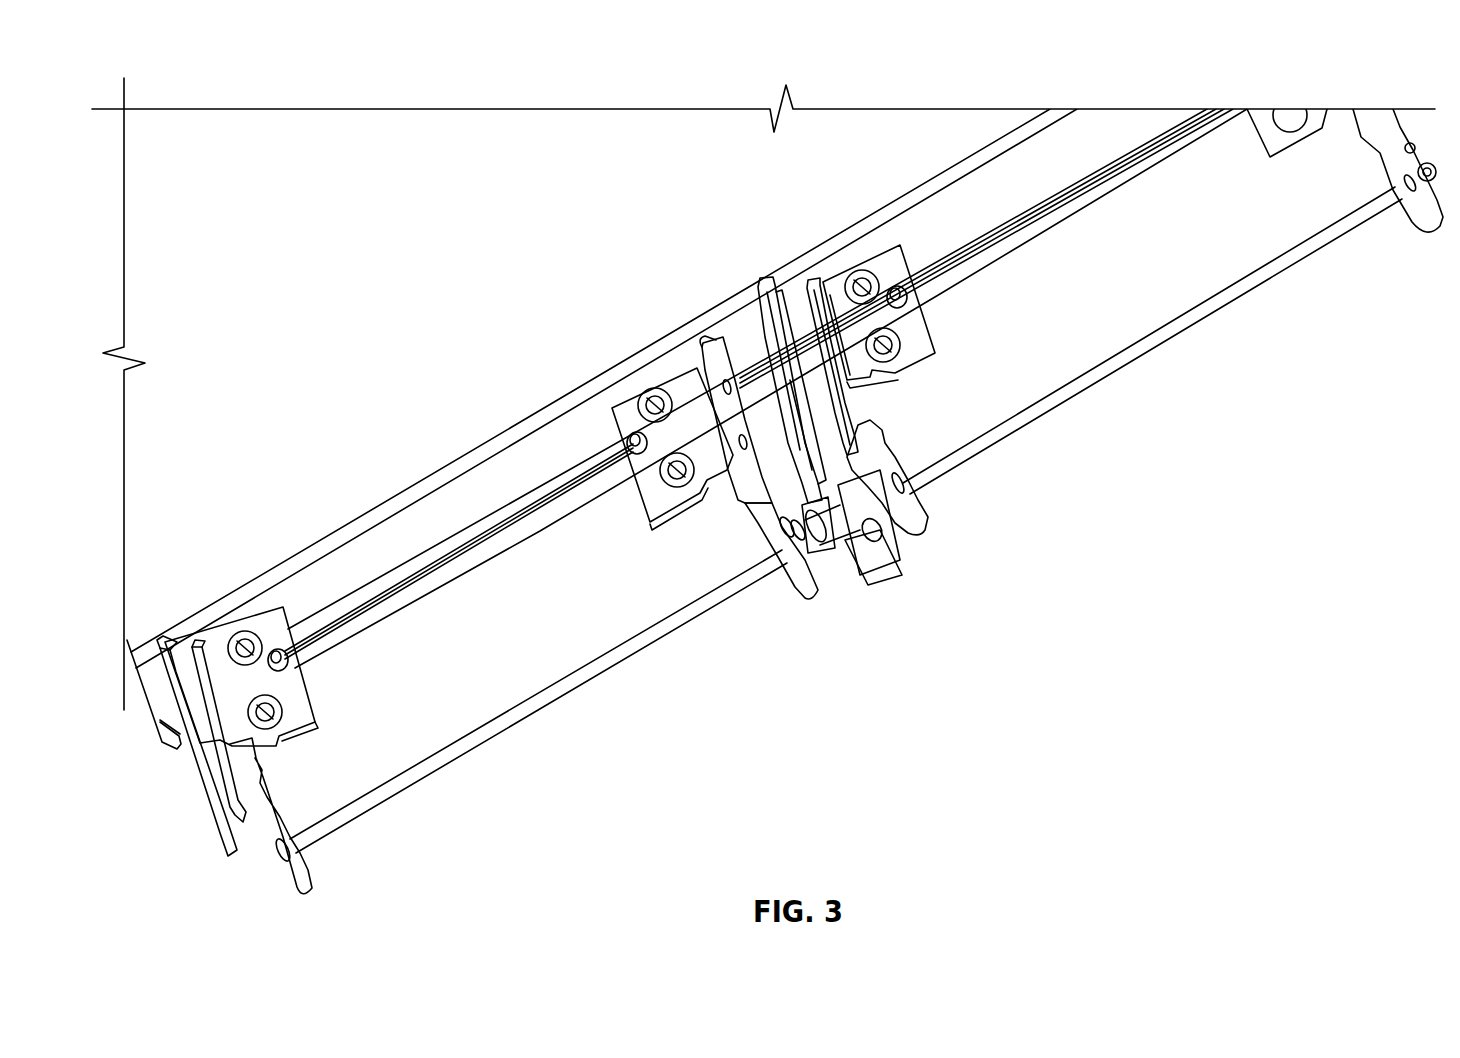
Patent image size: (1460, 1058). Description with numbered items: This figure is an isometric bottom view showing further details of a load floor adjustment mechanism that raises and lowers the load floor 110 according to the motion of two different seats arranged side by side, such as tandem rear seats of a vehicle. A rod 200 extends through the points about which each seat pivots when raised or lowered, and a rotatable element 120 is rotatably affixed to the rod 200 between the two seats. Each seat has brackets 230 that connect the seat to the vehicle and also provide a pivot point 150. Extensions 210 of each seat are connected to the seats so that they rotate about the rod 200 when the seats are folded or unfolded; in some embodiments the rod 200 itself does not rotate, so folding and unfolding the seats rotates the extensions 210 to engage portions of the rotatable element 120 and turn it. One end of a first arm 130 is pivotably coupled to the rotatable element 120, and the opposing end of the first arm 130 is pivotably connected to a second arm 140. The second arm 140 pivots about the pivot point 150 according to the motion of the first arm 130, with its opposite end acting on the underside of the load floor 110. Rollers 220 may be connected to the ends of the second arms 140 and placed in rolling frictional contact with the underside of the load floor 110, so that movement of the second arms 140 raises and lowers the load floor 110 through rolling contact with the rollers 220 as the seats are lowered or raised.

The load floor 110 is at (520, 400).
The rotatable element 120 is at (863, 573).
The first arm 130 is at (805, 450).
The second arm 140 is at (805, 282).
The pivot point 150 is at (717, 333).
The rod 200 is at (1033, 408).
The extensions 210 is at (830, 573).
The rollers 220 is at (470, 540).
The brackets 230 is at (653, 527).